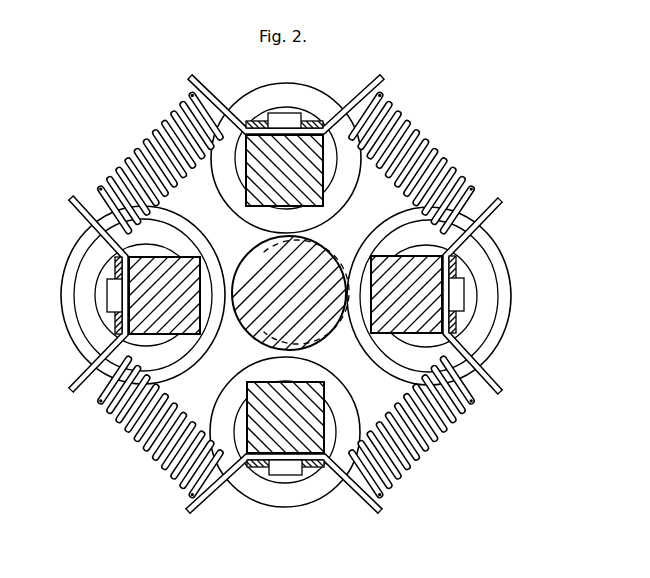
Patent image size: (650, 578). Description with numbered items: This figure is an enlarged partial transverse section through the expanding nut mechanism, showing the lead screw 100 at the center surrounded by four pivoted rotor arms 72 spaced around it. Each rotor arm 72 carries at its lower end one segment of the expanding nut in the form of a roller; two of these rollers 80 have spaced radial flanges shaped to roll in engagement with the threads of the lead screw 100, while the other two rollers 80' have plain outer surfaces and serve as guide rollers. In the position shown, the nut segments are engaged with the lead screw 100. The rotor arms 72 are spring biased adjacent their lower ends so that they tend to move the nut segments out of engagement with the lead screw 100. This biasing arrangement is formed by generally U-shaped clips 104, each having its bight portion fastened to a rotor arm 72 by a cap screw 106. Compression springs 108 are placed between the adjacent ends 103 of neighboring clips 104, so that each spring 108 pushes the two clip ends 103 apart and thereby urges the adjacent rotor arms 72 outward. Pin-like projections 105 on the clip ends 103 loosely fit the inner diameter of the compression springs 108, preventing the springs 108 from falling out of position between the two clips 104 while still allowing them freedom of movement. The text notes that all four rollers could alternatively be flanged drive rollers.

The pivoted rotor arm 72 is at (300, 200).
The roller 80 is at (283, 295).
The roller 80' is at (285, 301).
The lead screw 100 is at (310, 250).
The end of clip 103 is at (208, 92).
The U-shaped clip 104 is at (216, 94).
The pin-like projection 105 is at (180, 110).
The cap screw 106 is at (288, 118).
The compression spring 108 is at (148, 138).